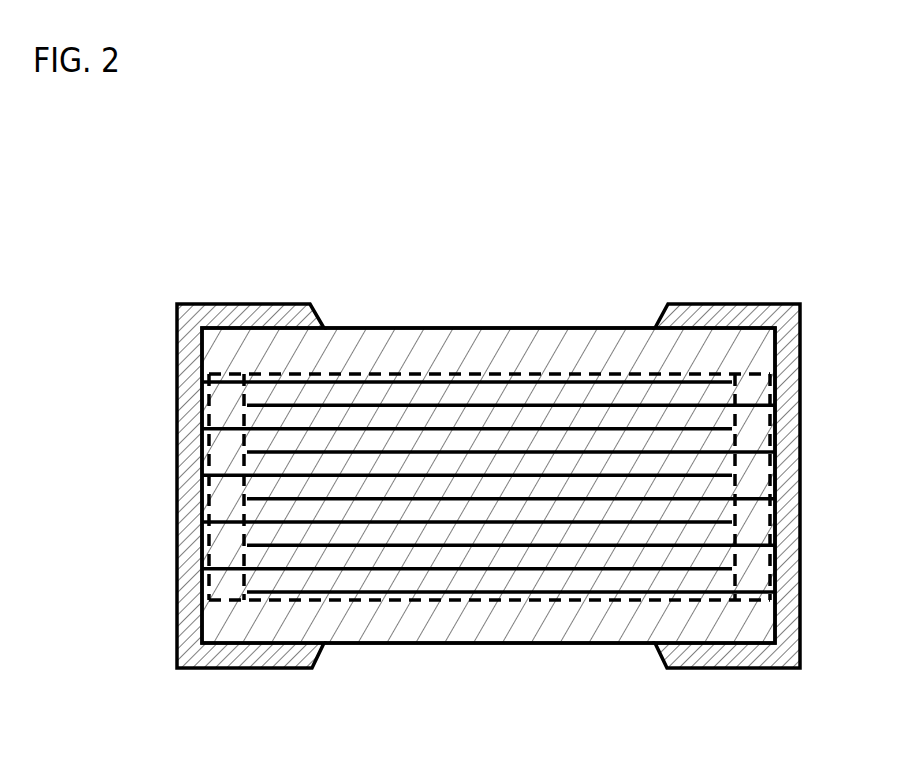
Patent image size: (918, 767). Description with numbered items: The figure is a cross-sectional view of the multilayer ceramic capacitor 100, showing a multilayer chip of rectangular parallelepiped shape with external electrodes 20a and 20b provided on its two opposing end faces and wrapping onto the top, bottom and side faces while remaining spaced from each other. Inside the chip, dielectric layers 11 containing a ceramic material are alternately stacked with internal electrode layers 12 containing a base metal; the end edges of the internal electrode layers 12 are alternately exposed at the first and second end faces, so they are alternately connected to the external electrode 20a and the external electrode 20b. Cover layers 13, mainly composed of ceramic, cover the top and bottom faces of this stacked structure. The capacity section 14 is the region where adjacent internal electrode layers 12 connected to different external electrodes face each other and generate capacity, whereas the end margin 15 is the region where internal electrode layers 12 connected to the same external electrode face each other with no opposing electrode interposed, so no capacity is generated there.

The multilayer ceramic capacitor 100 is at (703, 250).
The dielectric layer 11 is at (603, 555).
The internal electrode layer 12 is at (470, 524).
The cover layer 13 is at (390, 345).
The capacity section 14 is at (512, 374).
The end margin 15 is at (227, 374).
The external electrode 20a is at (200, 304).
The external electrode 20b is at (767, 304).